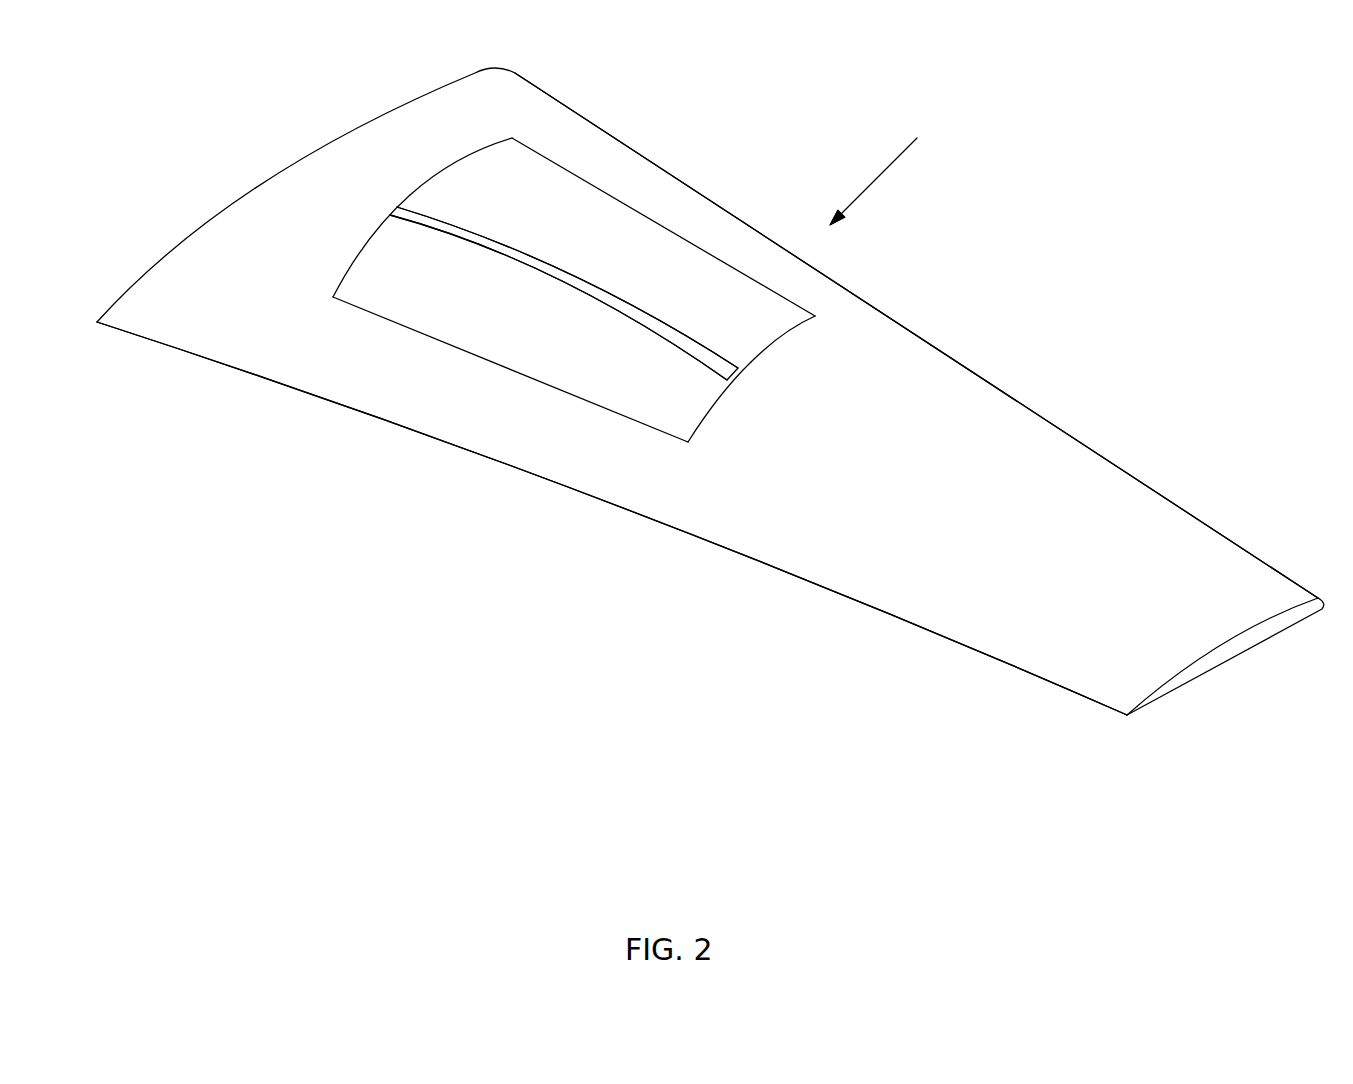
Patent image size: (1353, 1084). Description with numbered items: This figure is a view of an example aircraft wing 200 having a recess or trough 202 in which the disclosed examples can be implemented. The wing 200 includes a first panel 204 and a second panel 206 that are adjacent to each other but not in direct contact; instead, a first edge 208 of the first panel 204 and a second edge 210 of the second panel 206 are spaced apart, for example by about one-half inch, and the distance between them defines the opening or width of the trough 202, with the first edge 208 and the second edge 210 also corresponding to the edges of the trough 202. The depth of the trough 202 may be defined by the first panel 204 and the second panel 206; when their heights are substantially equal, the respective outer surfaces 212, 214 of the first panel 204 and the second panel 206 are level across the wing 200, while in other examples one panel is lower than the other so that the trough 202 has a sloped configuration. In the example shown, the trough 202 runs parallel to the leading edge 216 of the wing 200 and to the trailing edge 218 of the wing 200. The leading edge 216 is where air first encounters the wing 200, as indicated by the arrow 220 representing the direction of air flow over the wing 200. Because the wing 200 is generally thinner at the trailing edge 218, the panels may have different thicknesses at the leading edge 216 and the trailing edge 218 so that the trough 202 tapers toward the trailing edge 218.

The aircraft wing 200 is at (184, 88).
The trough 202 is at (540, 262).
The first panel 204 is at (472, 175).
The second panel 206 is at (378, 270).
The first edge 208 is at (615, 292).
The second edge 210 is at (565, 282).
The outer surface of first panel 212 is at (546, 214).
The outer surface of second panel 214 is at (639, 374).
The leading edge 216 is at (970, 367).
The trailing edge 218 is at (675, 528).
The arrow 220 is at (898, 158).